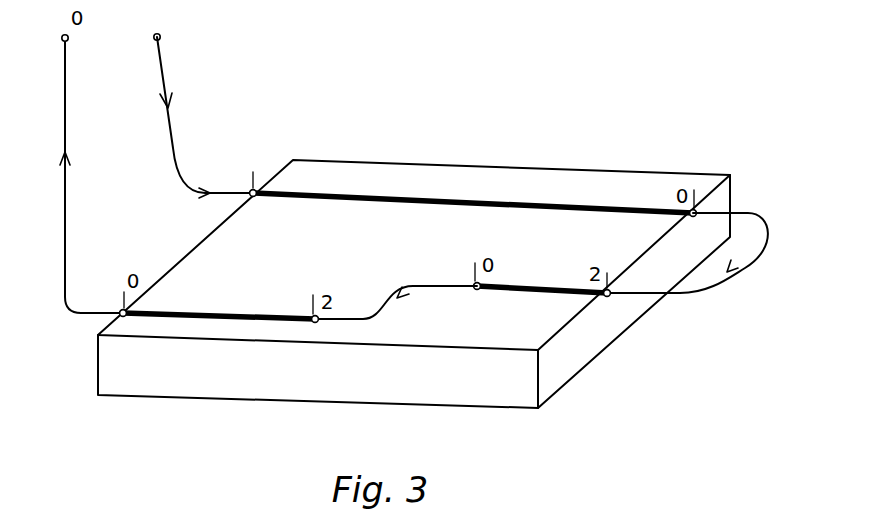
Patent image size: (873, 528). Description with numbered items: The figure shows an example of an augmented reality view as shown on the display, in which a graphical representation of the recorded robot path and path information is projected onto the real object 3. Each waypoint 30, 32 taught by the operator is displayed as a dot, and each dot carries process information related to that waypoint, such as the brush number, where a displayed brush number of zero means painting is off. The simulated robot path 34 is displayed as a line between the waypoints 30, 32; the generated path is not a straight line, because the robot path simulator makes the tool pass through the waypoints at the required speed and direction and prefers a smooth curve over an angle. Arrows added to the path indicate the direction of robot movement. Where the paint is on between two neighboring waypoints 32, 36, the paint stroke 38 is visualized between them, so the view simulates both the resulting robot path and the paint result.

The object 3 is at (605, 328).
The waypoint 30 is at (153, 37).
The waypoint 32 is at (253, 203).
The simulated robot path 34 is at (175, 133).
The waypoint 36 is at (695, 220).
The paint stroke 38 is at (417, 198).